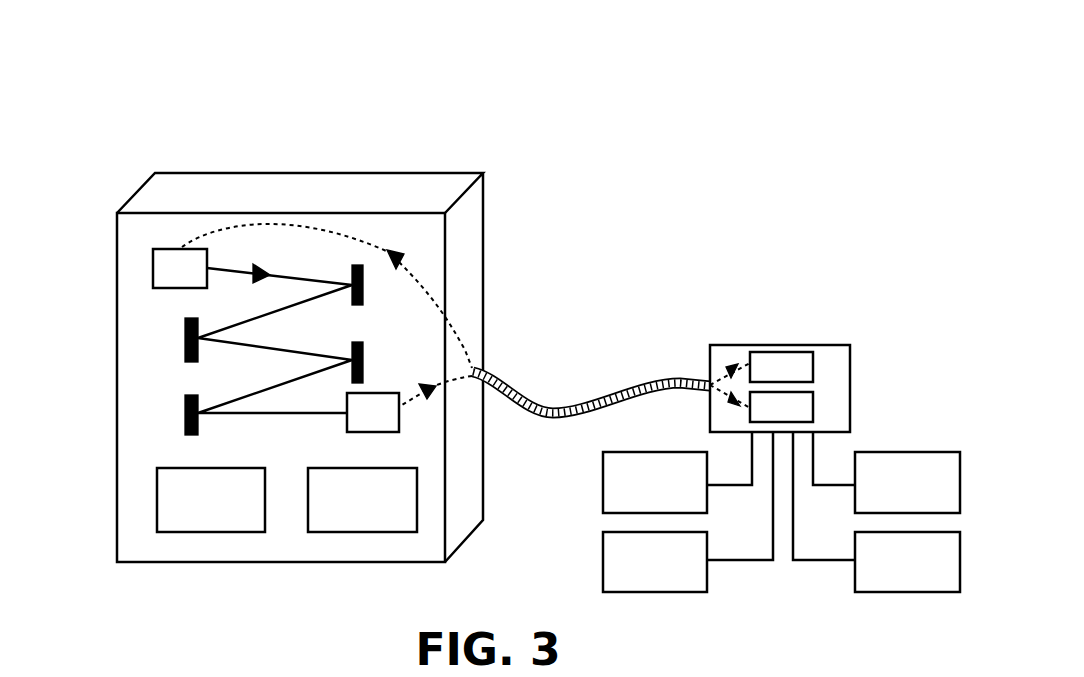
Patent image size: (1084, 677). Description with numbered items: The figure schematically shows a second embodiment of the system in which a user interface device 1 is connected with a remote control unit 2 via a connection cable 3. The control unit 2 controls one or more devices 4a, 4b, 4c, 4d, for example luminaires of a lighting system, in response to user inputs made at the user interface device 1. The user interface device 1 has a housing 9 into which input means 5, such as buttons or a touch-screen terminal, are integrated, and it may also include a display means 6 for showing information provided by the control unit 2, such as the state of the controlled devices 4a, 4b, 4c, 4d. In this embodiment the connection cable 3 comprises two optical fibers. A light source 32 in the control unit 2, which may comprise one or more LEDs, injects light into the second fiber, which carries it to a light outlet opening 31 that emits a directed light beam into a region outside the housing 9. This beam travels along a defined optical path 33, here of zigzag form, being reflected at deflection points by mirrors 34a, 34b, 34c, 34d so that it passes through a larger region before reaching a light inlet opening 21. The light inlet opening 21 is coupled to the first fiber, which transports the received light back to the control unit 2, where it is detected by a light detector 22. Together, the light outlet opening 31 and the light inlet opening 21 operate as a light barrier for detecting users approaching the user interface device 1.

The user interface device 1 is at (440, 142).
The housing 9 is at (186, 193).
The light outlet opening 31 is at (163, 265).
The optical path 33 is at (300, 278).
The mirror 34a is at (363, 278).
The mirror 34b is at (187, 342).
The mirror 34c is at (363, 350).
The mirror 34d is at (187, 415).
The light inlet opening 21 is at (393, 420).
The input means 5 is at (197, 512).
The display means 6 is at (348, 512).
The connection cable 3 is at (650, 381).
The control unit 2 is at (835, 343).
The light source 32 is at (782, 363).
The light detector 22 is at (808, 410).
The controlled device 4a is at (636, 497).
The controlled device 4b is at (636, 575).
The controlled device 4c is at (891, 497).
The controlled device 4d is at (891, 575).